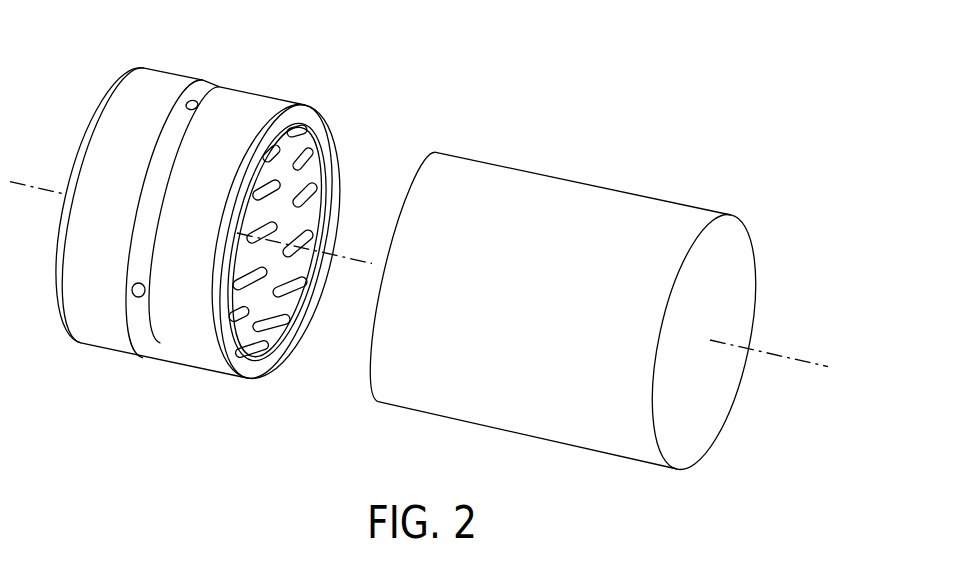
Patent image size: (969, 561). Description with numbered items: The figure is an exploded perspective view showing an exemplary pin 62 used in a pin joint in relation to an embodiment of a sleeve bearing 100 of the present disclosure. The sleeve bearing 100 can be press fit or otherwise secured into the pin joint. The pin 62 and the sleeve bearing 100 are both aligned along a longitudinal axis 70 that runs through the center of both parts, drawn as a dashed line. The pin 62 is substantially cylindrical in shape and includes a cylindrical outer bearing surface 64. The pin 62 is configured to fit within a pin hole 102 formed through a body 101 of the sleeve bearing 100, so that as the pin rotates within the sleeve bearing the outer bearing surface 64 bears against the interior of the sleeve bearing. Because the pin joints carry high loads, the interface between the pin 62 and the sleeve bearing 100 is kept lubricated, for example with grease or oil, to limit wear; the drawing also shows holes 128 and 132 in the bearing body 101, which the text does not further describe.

The sleeve bearing 100 is at (212, 208).
The body 101 is at (103, 157).
The pin hole 102 is at (312, 173).
The hole 128 is at (192, 100).
The hole 132 is at (157, 340).
The pin 62 is at (572, 295).
The cylindrical outer bearing surface 64 is at (563, 428).
The longitudinal axis 70 is at (793, 362).